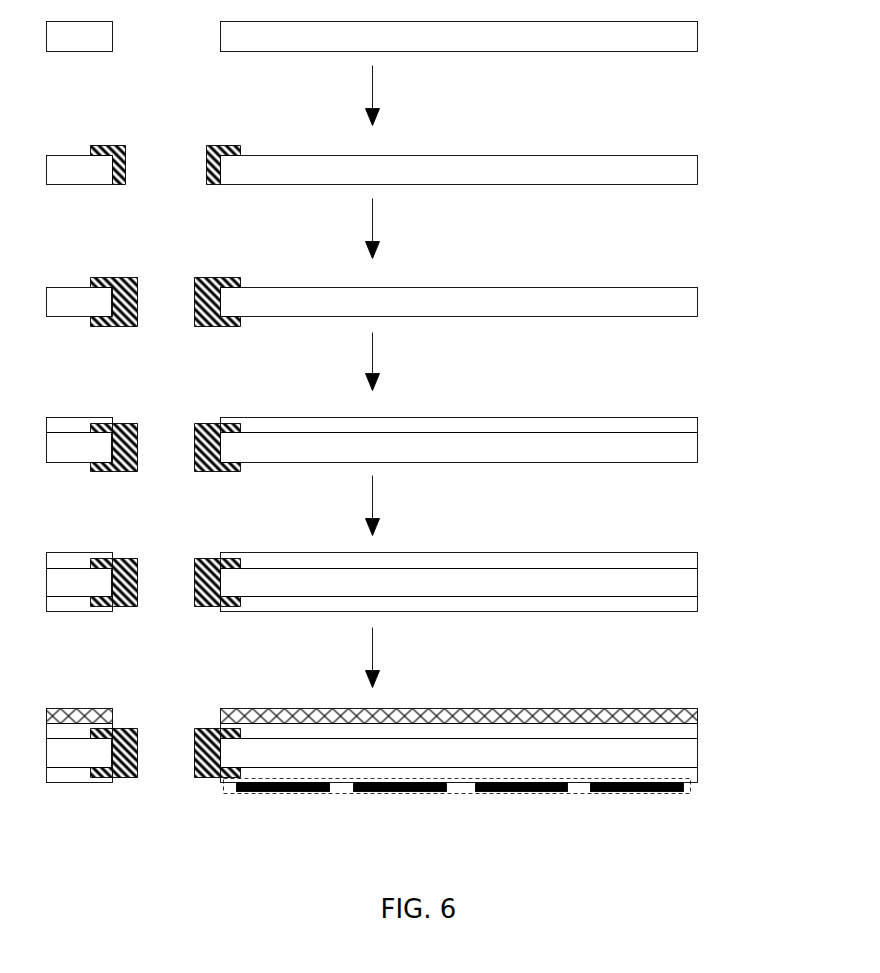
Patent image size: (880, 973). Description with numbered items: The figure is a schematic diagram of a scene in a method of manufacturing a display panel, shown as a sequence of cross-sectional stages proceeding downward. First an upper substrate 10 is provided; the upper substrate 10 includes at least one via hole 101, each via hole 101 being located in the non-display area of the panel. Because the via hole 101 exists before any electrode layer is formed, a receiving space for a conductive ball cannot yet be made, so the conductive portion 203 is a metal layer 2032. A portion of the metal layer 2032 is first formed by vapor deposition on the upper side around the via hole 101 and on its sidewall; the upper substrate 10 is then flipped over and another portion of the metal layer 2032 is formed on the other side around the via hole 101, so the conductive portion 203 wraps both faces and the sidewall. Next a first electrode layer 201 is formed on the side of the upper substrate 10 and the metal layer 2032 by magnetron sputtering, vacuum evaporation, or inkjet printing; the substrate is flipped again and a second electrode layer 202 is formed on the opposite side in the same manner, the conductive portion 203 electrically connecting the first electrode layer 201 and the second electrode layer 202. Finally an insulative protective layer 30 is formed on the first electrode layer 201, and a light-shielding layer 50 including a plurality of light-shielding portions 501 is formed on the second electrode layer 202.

The upper substrate 10 is at (683, 41).
The via hole 101 is at (214, 37).
The first electrode layer 201 is at (685, 425).
The second electrode layer 202 is at (685, 607).
The conductive portion 203 is at (118, 277).
The metal layer 2032 is at (120, 145).
The protective layer 30 is at (683, 715).
The light-shielding layer 50 is at (690, 795).
The light-shielding portion 501 is at (687, 785).